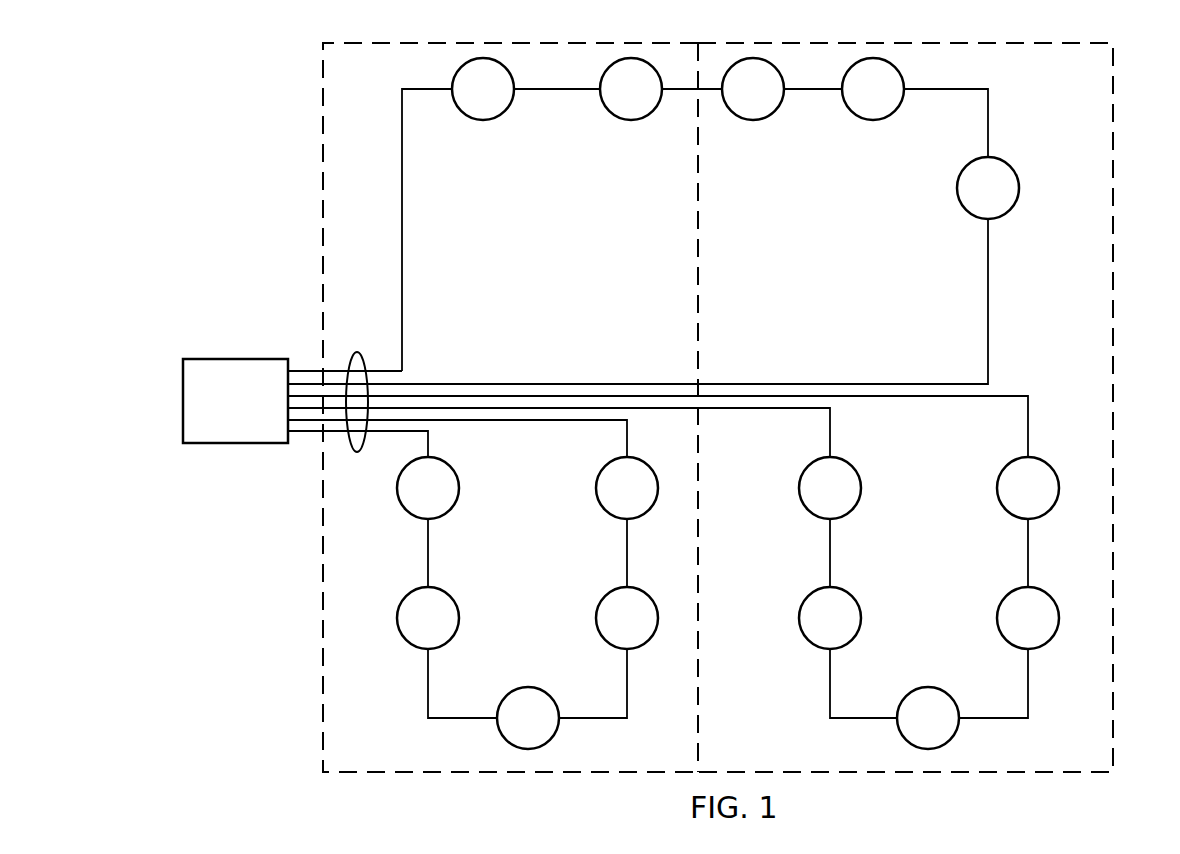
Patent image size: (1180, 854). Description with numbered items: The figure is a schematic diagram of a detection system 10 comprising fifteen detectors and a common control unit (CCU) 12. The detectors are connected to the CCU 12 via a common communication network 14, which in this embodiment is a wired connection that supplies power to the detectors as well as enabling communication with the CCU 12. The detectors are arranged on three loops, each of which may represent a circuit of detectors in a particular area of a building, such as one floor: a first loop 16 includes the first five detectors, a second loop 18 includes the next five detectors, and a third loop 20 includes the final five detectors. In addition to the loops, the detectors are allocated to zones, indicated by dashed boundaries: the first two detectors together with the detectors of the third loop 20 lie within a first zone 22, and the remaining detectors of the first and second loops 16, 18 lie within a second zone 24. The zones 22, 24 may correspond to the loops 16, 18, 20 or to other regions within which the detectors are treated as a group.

The detection system 10 is at (217, 130).
The common control unit (CCU) 12 is at (237, 359).
The common communication network 14 is at (357, 352).
The first loop 16 is at (988, 124).
The second loop 18 is at (1029, 432).
The third loop 20 is at (428, 547).
The first zone 22 is at (388, 43).
The second zone 24 is at (1113, 96).